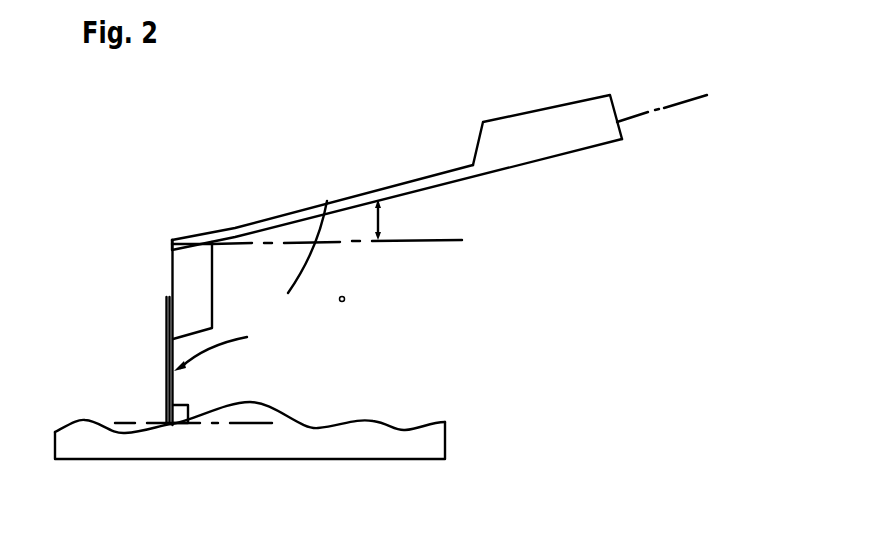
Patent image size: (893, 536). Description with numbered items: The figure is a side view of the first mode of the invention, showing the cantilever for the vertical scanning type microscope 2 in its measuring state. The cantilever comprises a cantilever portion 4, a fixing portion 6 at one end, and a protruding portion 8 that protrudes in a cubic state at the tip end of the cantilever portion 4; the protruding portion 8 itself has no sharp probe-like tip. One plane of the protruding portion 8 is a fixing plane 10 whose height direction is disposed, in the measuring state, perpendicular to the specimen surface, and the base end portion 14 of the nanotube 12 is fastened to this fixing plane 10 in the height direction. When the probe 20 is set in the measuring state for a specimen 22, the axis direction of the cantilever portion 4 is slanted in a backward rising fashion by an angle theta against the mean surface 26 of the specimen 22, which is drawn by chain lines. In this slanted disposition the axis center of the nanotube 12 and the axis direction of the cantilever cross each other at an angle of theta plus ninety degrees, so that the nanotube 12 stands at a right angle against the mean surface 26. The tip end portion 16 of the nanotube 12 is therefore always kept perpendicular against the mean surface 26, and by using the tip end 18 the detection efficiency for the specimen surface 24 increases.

The cantilever for the vertical scanning type microscope 2 is at (332, 193).
The cantilever portion 4 is at (410, 183).
The fixing portion 6 is at (547, 128).
The protruding portion 8 is at (200, 285).
The fixing plane 10 is at (172, 273).
The nanotube 12 is at (161, 361).
The base end portion 14 is at (168, 326).
The tip end portion 16 is at (168, 398).
The tip end 18 is at (168, 423).
The probe 20 is at (276, 136).
The specimen 22 is at (305, 440).
The specimen surface 24 is at (297, 423).
The mean surface 26 is at (266, 422).